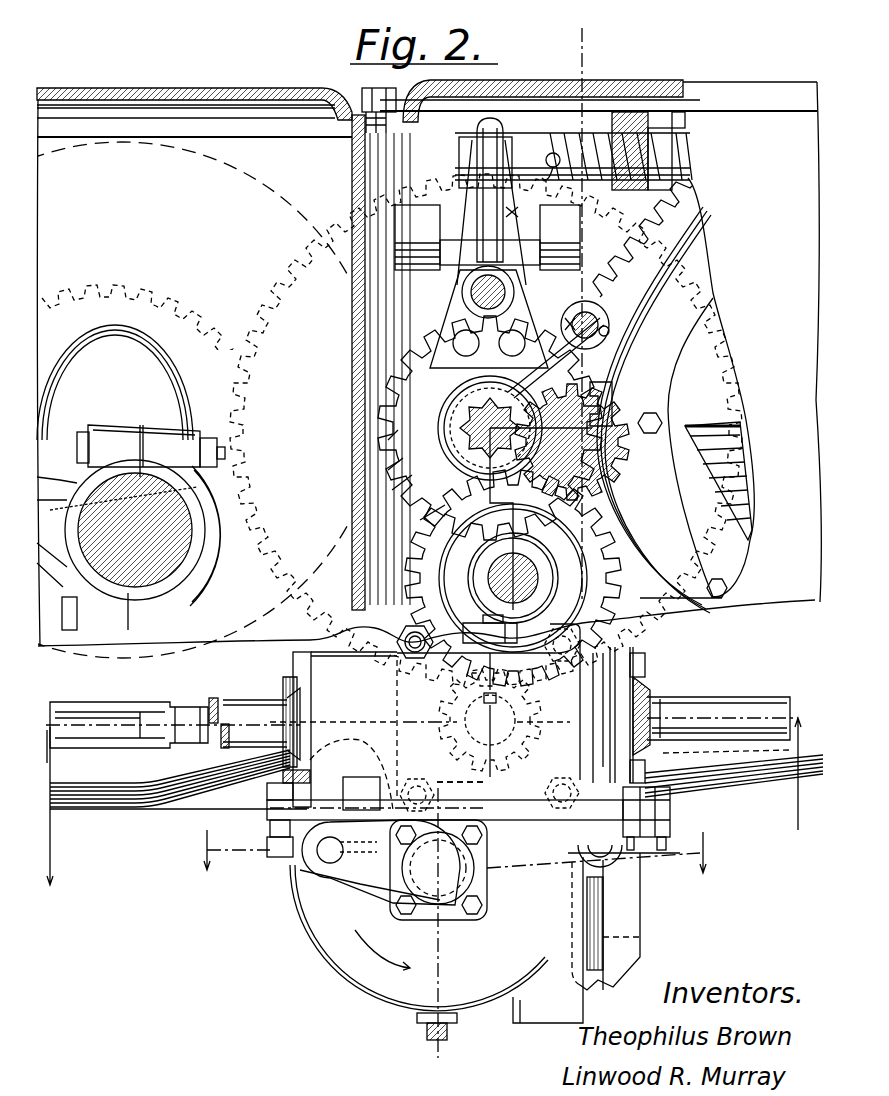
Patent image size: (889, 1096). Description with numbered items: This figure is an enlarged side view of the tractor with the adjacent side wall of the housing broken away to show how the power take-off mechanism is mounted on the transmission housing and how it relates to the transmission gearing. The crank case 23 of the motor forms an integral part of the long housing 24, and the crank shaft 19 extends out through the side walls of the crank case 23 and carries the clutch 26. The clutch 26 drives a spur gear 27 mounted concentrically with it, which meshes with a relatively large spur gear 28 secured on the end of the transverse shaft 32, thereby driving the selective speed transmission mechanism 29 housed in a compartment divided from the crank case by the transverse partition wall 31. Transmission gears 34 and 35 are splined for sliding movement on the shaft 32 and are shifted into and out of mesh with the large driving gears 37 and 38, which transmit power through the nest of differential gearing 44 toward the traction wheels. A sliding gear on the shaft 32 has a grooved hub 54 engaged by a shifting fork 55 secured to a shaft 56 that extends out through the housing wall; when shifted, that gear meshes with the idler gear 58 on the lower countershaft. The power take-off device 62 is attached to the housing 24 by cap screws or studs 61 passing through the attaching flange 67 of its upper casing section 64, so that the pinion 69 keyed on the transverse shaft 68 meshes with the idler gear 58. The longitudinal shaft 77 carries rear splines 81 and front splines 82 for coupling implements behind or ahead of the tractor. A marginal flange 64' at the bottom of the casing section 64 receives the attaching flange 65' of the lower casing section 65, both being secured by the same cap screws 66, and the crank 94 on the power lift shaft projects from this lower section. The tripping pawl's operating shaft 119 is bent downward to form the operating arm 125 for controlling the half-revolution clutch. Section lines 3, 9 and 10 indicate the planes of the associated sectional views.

The section line 3- 3 is at (412, 1069).
The section line 9- 9 is at (432, 801).
The section line 10- 10 is at (457, 851).
The crank shaft 19 is at (120, 345).
The crank case 23 is at (148, 800).
The housing 24 is at (775, 785).
The clutch 26 is at (262, 185).
The spur gear 27 is at (155, 290).
The large spur gear 28 is at (285, 272).
The selective speed transmission mechanism 29 is at (405, 352).
The transverse partition wall 31 is at (352, 370).
The transverse shaft 32 is at (485, 418).
The transmission gear 34 is at (403, 460).
The transmission gear 35 is at (395, 450).
The large driving gear 37 is at (605, 412).
The large driving gear 38 is at (600, 500).
The differential gearing 44 is at (745, 452).
The grooved hub 54 is at (430, 525).
The shifting fork 55 is at (440, 478).
The shaft 56 is at (605, 328).
The idler gear 58 is at (420, 572).
The cap screws or studs 61 is at (400, 630).
The power take-off device 62 is at (298, 637).
The upper casing section 64 is at (276, 714).
The marginal flange 64' is at (449, 811).
The lower casing section 65 is at (404, 952).
The attaching flange 65' is at (260, 856).
The cap screws 66 is at (288, 862).
The attaching flange 67 is at (455, 630).
The transverse shaft 68 is at (482, 793).
The pinion 69 is at (530, 720).
The shaft 77 is at (228, 715).
The splines 81 is at (748, 738).
The splines 82 is at (112, 740).
The crank 94 is at (355, 882).
The operating shaft 119 is at (593, 865).
The operating arm 125 is at (640, 937).